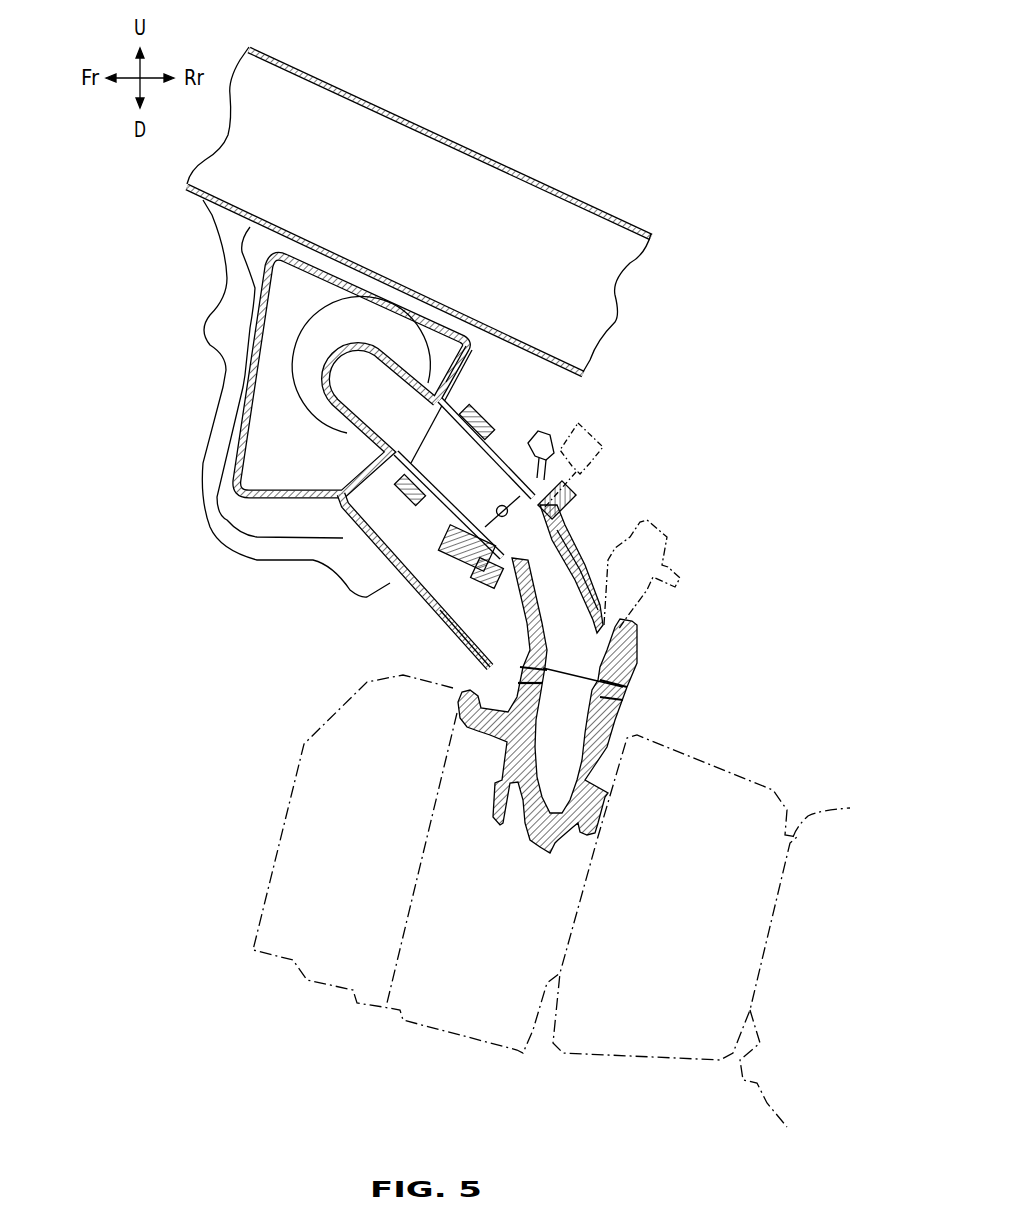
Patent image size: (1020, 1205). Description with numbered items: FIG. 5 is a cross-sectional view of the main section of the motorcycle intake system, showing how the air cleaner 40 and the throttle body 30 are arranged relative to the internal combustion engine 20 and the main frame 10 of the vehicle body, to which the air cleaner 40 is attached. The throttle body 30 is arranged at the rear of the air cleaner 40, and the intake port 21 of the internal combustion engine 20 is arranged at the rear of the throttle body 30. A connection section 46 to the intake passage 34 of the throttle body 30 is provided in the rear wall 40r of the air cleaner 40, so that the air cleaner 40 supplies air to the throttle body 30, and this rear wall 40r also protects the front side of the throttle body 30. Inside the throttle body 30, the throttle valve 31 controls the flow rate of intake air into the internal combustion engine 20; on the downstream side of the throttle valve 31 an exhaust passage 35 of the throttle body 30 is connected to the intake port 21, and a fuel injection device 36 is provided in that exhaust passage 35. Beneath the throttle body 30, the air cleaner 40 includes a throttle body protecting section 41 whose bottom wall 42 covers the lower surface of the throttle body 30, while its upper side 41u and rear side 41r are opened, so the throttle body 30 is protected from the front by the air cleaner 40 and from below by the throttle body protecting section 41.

The main frame 10 is at (337, 115).
The internal combustion engine 20 is at (283, 817).
The intake port 21 is at (563, 730).
The throttle body 30 is at (613, 458).
The throttle valve 31 is at (486, 525).
The intake passage 34 is at (482, 473).
The exhaust passage 35 is at (547, 555).
The fuel injection device 36 is at (667, 565).
The air cleaner 40 is at (218, 385).
The rear wall 40r is at (467, 383).
The throttle body protecting section 41 is at (400, 560).
The bottom wall 42 is at (410, 593).
The rear side 41r is at (500, 627).
The upper side 41u is at (587, 542).
The connection section 46 is at (420, 437).